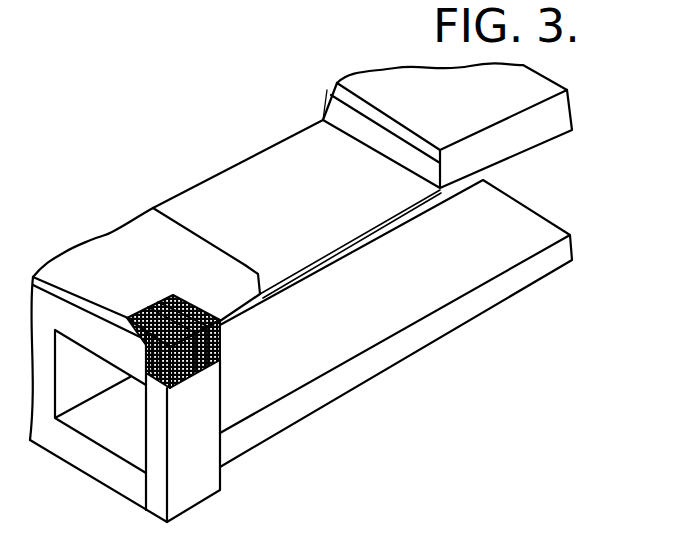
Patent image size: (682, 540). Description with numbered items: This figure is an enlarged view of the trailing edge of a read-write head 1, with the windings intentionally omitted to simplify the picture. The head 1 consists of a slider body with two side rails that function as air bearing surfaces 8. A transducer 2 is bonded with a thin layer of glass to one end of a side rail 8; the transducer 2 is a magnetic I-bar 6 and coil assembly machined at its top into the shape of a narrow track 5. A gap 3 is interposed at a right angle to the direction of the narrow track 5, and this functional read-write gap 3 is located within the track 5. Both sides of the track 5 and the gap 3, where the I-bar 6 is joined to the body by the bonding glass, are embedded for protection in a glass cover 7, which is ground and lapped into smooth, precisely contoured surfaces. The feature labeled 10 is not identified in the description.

The read-write head 1 is at (330, 150).
The transducer 2 is at (108, 438).
The gap 3 is at (165, 318).
The narrow track 5 is at (190, 298).
The magnetic I-bar 6 is at (221, 493).
The glass cover 7 is at (130, 318).
The air bearing surfaces 8 is at (143, 222).
The groove 10 is at (368, 243).